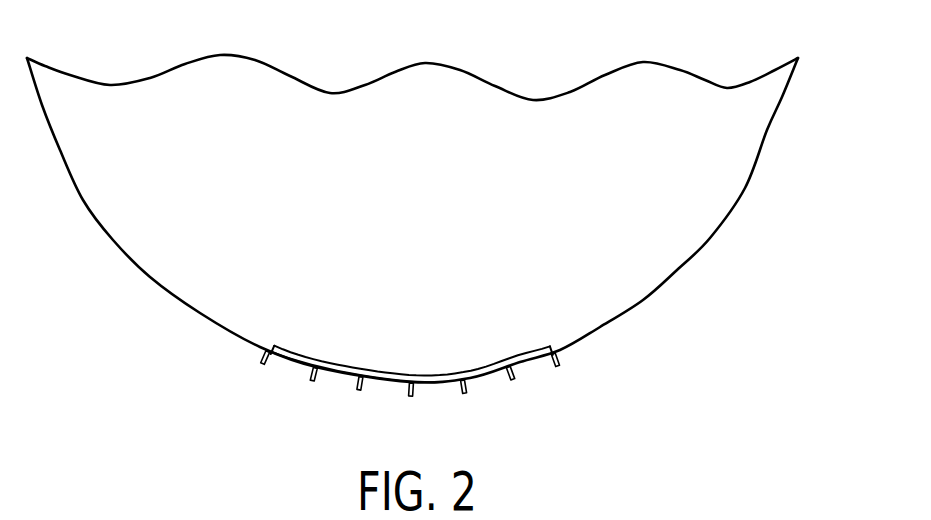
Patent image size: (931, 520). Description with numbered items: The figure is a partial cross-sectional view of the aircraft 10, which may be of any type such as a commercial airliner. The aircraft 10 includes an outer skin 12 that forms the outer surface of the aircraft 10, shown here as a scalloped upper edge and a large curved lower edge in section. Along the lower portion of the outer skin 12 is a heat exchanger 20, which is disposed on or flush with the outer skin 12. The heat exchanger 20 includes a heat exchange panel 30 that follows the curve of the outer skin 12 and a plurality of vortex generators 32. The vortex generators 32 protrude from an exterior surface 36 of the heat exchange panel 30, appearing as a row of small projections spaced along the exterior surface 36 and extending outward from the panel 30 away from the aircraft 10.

The aircraft 10 is at (425, 259).
The outer skin 12 is at (710, 238).
The heat exchanger 20 is at (482, 401).
The heat exchange panel 30 is at (532, 358).
The vortex generators 32 is at (560, 355).
The exterior surface 36 is at (293, 363).